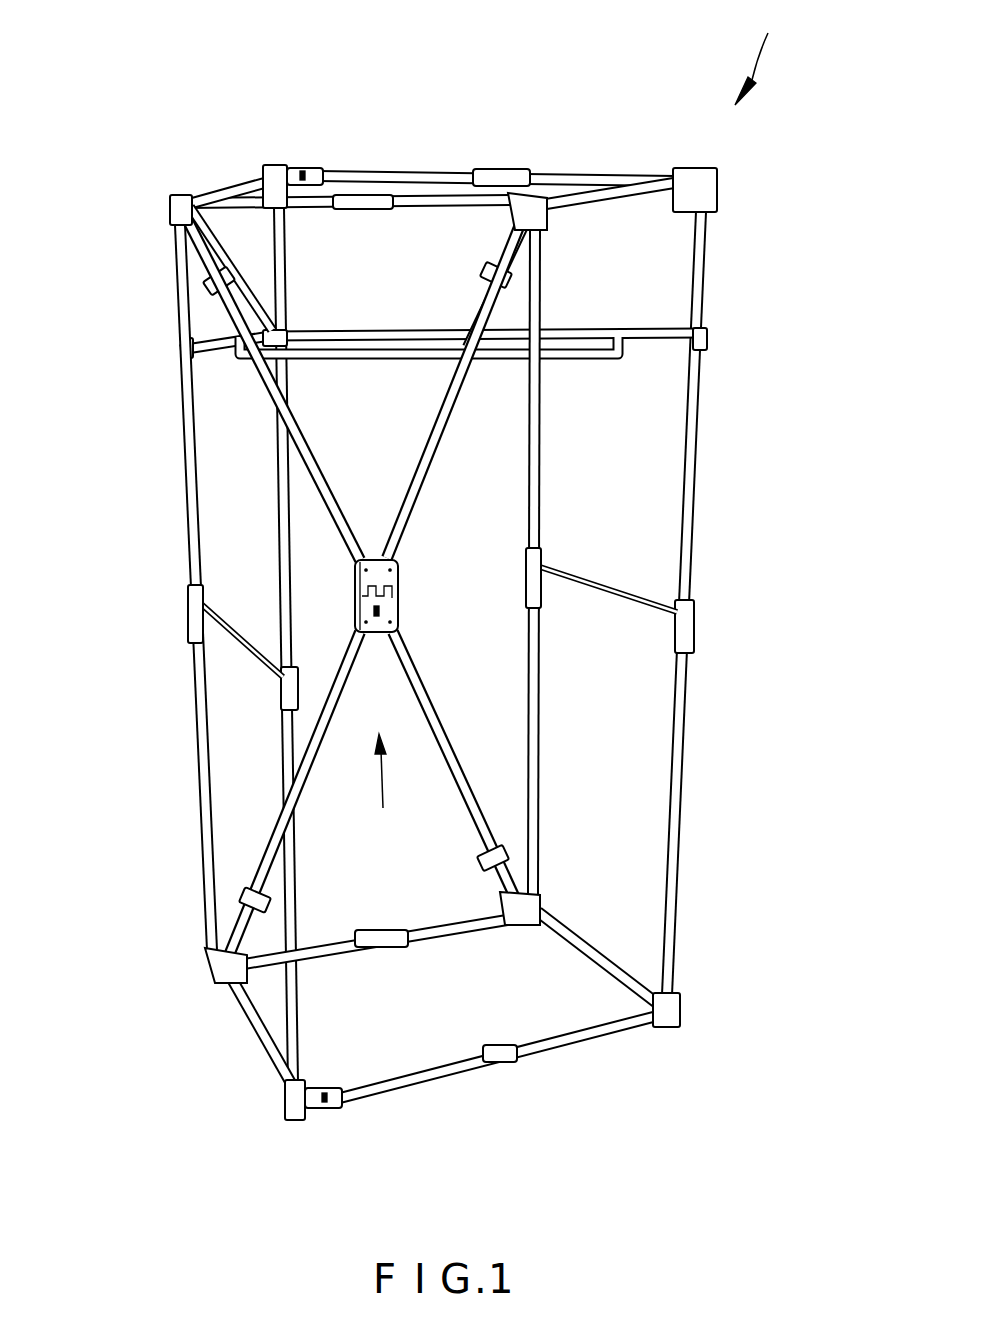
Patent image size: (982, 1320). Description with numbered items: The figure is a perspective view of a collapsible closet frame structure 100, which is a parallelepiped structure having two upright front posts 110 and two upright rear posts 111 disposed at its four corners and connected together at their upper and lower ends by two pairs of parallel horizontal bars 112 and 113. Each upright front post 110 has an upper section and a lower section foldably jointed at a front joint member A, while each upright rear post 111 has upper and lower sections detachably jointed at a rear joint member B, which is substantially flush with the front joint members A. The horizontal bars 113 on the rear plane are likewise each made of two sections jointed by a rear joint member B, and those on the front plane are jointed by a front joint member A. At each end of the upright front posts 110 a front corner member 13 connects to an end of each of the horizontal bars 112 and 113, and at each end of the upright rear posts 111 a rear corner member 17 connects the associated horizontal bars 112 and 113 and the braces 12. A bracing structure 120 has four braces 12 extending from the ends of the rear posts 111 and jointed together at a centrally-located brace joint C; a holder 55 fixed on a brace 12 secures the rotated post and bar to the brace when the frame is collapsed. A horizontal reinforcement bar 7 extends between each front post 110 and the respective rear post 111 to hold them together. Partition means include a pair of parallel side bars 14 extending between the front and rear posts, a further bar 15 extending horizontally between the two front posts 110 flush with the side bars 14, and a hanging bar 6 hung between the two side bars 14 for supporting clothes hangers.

The collapsible closet frame structure 100 is at (764, 55).
The upright front post 110 is at (700, 530).
The upright rear post 111 is at (540, 462).
The horizontal bar 112 is at (245, 183).
The horizontal bar 113 is at (600, 176).
The front corner member 13 is at (292, 168).
The rear corner member 17 is at (180, 198).
The brace 12 is at (390, 530).
The brace joint C is at (400, 584).
The further bar 15 is at (396, 328).
The hanging bar 6 is at (400, 352).
The side bar 14 is at (190, 352).
The holder 55 is at (208, 282).
The horizontal reinforcement bar 7 is at (612, 595).
The front joint member A is at (505, 178).
The rear joint member B is at (388, 196).
The bracing structure 120 is at (386, 790).